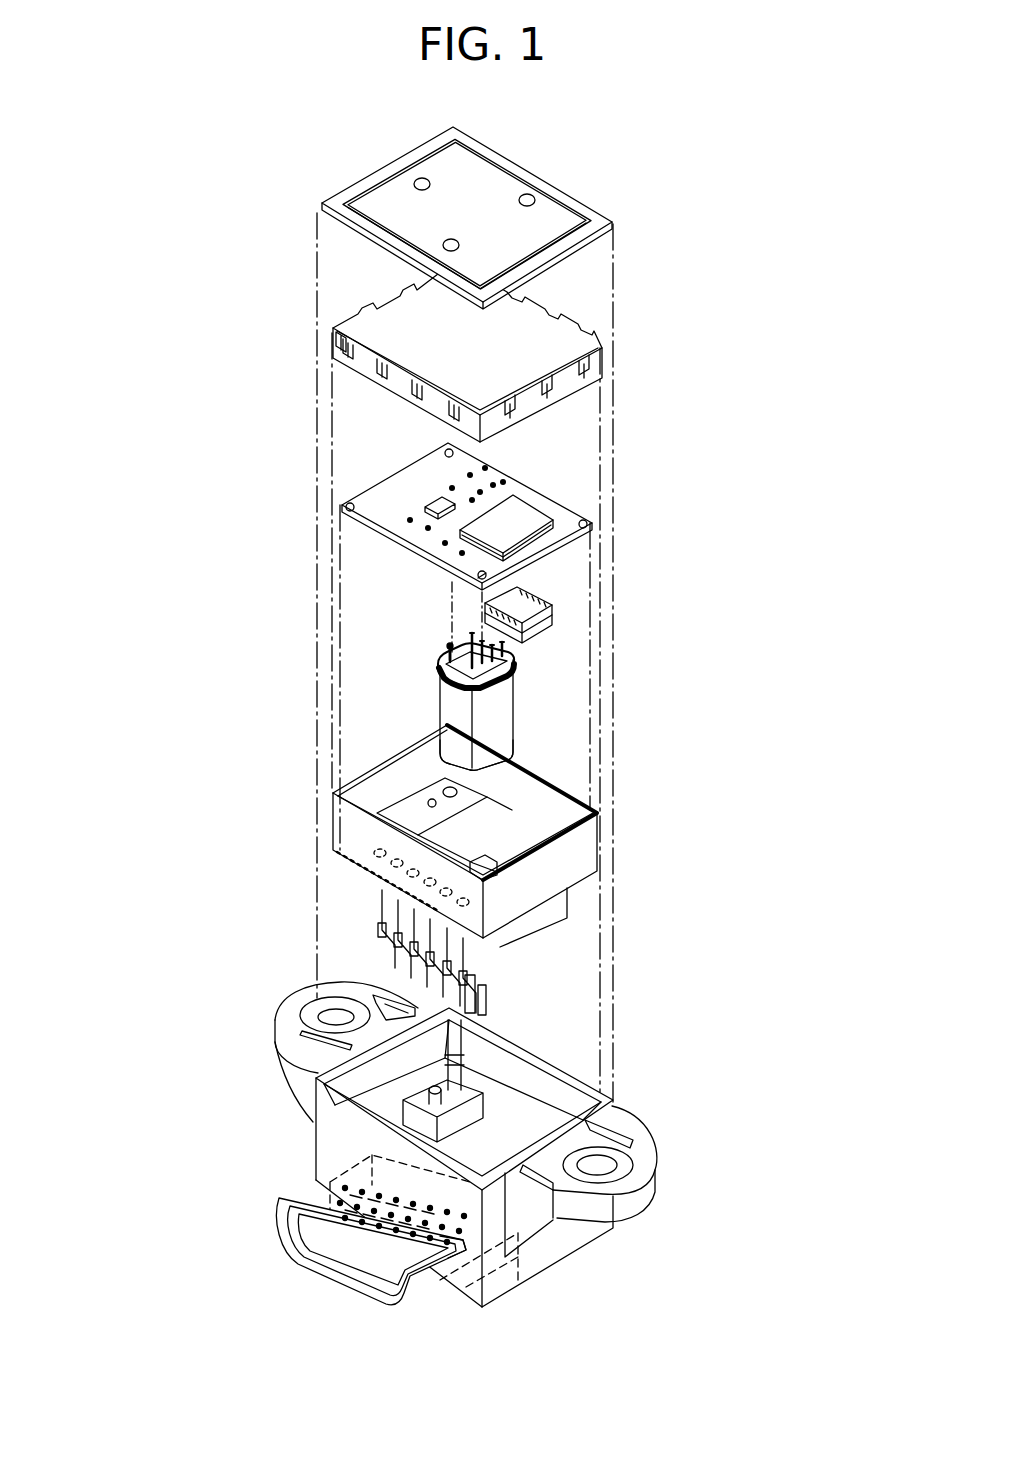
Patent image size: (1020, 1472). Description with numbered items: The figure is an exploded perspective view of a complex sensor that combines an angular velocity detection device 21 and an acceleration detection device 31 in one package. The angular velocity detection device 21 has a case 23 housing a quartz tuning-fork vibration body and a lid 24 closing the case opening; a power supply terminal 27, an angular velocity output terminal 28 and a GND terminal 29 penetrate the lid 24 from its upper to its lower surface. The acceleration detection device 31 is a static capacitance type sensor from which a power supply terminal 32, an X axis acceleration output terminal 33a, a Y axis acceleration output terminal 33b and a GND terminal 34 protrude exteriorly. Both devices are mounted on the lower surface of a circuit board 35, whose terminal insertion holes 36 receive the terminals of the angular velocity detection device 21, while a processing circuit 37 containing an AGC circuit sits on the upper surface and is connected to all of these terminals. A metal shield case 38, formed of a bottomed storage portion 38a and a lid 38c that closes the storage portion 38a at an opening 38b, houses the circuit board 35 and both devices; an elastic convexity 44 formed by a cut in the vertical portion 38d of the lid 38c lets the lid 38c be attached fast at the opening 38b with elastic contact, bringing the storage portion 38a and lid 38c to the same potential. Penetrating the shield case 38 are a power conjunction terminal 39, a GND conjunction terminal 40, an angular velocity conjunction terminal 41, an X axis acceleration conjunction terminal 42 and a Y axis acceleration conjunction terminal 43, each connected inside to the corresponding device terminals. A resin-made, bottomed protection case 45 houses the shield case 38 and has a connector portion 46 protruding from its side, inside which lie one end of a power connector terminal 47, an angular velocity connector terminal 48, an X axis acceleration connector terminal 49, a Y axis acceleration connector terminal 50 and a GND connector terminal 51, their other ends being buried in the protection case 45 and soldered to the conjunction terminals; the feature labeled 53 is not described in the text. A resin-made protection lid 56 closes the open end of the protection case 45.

The protection lid 56 is at (490, 190).
The lid 38c is at (405, 318).
The elastic convexity 44 is at (336, 352).
The vertical portion 38d is at (405, 392).
The terminal insertion holes 36 is at (490, 463).
The circuit board 35 is at (517, 488).
The processing circuit 37 is at (513, 513).
The power supply terminal 32 is at (528, 582).
The X axis acceleration output terminal 33a is at (552, 597).
The Y axis acceleration output terminal 33b is at (552, 603).
The acceleration detection device 31 is at (599, 588).
The power supply terminal 27 is at (510, 652).
The lid 24 is at (510, 665).
The angular velocity detection device 21 is at (479, 689).
The case 23 is at (500, 737).
The opening 38b is at (570, 790).
The storage portion 38a is at (523, 813).
The shield case 38 is at (523, 836).
The GND terminal 34 is at (452, 582).
The GND terminal 29 is at (447, 653).
The angular velocity output terminal 28 is at (437, 673).
The GND conjunction terminal 40 is at (382, 902).
The angular velocity conjunction terminal 41 is at (377, 927).
The power conjunction terminal 39 is at (393, 962).
The Y axis acceleration conjunction terminal 43 is at (482, 965).
The X axis acceleration conjunction terminal 42 is at (477, 1000).
The connector portion 46 is at (386, 1255).
The GND connector terminal 51 is at (330, 1228).
The angular velocity connector terminal 48 is at (335, 1227).
The power connector terminal 47 is at (378, 1260).
The Y axis acceleration connector terminal 50 is at (388, 1250).
The X axis acceleration connector terminal 49 is at (405, 1267).
The opening 53 is at (458, 1243).
The protection case 45 is at (580, 1242).